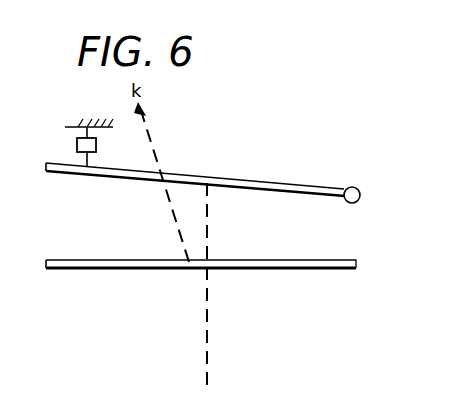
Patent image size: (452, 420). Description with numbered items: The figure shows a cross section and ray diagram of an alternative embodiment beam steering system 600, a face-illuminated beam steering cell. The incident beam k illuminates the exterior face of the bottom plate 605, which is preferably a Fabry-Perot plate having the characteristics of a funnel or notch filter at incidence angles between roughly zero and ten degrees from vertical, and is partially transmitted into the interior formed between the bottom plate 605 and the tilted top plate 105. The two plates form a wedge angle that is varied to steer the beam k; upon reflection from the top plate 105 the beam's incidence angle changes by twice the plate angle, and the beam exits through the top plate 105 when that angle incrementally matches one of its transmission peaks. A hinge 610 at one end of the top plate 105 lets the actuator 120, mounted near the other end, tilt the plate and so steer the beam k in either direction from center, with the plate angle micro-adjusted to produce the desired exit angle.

The top plate 105 is at (238, 177).
The actuator 120 is at (77, 143).
The beam steering system 600 is at (345, 142).
The bottom plate 605 is at (238, 269).
The hinge 610 is at (353, 203).